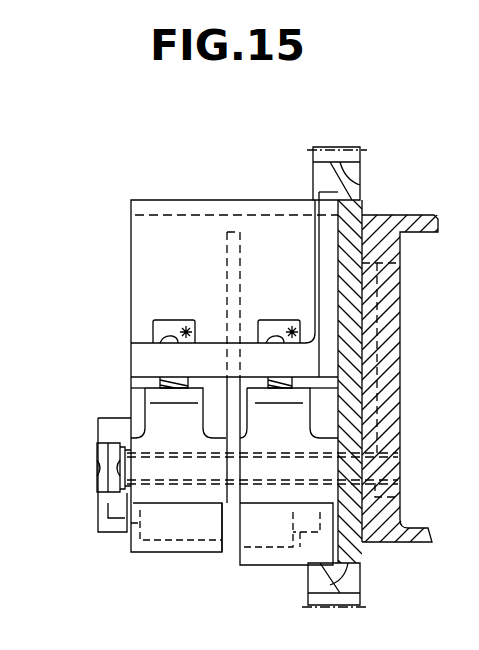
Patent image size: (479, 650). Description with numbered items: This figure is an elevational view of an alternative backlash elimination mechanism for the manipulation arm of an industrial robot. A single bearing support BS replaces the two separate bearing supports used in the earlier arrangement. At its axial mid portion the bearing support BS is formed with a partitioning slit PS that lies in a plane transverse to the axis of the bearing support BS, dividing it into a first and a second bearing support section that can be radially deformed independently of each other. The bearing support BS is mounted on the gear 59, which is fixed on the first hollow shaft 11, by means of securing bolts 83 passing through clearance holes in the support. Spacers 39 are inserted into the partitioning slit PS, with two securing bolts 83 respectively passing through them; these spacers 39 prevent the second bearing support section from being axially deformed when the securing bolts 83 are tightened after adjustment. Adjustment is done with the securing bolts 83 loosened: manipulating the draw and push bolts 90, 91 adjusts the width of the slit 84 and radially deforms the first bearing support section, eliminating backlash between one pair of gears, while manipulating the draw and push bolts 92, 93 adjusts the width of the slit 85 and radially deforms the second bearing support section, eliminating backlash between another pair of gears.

The first hollow shaft 11 is at (400, 217).
The spacers 39 is at (230, 492).
The gear 59 is at (325, 143).
The securing bolts 83 is at (98, 472).
The slit 84 is at (300, 383).
The slit 85 is at (147, 383).
The draw and push bolt 90 is at (262, 335).
The draw and push bolt 91 is at (280, 333).
The draw and push bolt 92 is at (158, 332).
The draw and push bolt 93 is at (170, 335).
The bearing support BS is at (165, 200).
The partitioning slit PS is at (230, 282).